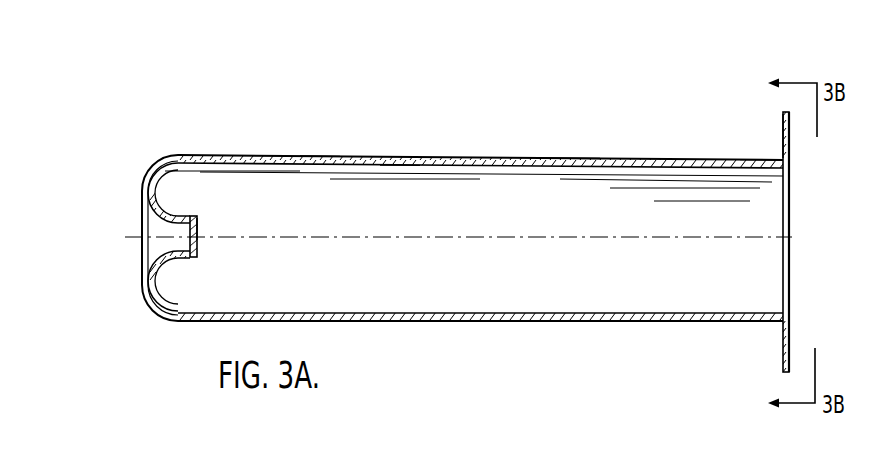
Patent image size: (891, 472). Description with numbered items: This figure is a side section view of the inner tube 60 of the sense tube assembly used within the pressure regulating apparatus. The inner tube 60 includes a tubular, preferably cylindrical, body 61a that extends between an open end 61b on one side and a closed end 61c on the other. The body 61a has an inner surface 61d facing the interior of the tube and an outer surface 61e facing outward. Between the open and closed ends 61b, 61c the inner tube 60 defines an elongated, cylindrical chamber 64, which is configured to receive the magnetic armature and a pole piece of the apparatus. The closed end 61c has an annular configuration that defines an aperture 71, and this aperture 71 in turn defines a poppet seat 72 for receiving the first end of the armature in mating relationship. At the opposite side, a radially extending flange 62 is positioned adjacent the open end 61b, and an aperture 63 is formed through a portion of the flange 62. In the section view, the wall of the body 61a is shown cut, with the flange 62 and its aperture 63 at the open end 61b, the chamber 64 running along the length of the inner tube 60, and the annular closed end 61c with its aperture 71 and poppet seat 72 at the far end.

The inner tube 60 is at (658, 126).
The tubular body 61a is at (558, 158).
The open end 61b is at (777, 158).
The closed end 61c is at (166, 155).
The inner surface 61d is at (398, 166).
The outer surface 61e is at (318, 156).
The flange 62 is at (788, 340).
The aperture 63 is at (784, 140).
The chamber 64 is at (748, 210).
The aperture 71 is at (197, 252).
The poppet seat 72 is at (210, 220).